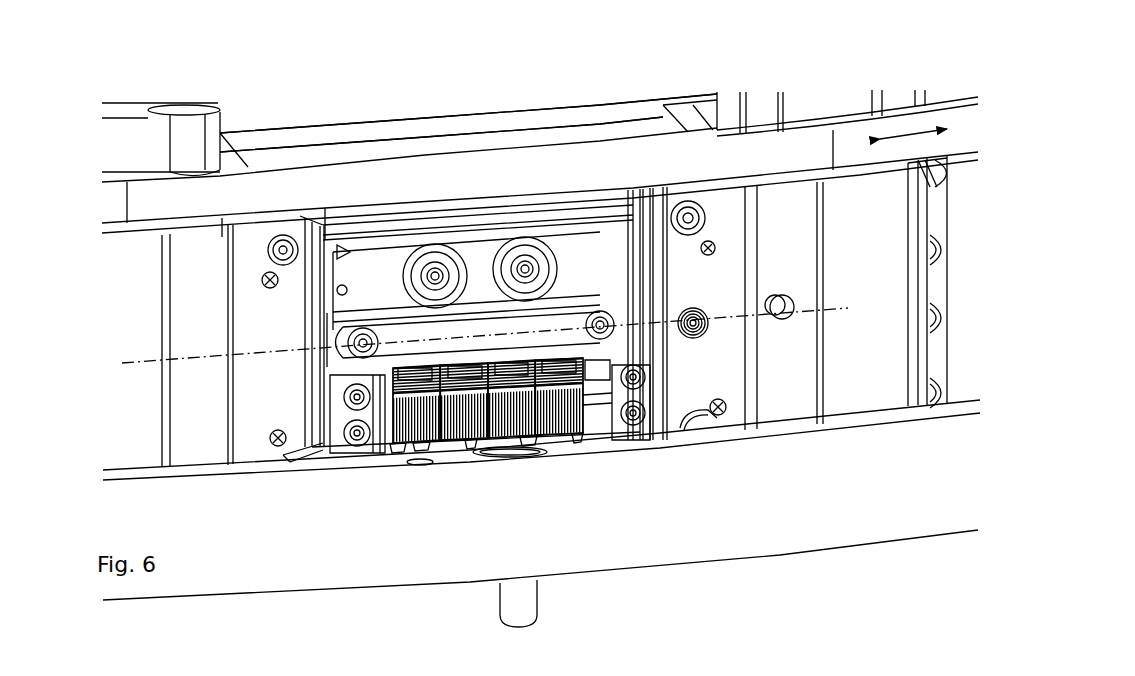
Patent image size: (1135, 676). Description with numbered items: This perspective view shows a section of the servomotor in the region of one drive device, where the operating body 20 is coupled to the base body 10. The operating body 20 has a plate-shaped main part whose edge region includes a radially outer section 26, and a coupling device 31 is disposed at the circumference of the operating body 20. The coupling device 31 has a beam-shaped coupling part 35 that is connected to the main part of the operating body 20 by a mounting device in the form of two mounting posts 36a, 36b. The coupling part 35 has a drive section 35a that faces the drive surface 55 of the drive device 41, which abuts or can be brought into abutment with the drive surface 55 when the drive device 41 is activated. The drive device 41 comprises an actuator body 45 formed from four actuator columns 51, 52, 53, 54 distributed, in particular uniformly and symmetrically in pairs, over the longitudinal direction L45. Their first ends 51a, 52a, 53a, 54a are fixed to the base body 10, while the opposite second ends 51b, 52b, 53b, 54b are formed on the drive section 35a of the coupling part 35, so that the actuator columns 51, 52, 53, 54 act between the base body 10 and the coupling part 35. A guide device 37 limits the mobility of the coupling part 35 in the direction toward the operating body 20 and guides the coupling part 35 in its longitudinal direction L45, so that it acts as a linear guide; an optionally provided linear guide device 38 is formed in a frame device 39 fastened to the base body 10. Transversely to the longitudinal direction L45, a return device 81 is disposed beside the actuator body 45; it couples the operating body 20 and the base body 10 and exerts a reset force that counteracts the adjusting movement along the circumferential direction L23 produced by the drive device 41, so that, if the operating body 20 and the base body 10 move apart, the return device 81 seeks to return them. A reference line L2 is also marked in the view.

The base body 10 is at (873, 523).
The operating body 20 is at (914, 62).
The radially outer section 26 is at (520, 160).
The coupling device 31 is at (617, 150).
The coupling part 35 is at (577, 307).
The drive section 35a is at (397, 443).
The mounting post 36a is at (665, 303).
The mounting post 36b is at (327, 337).
The guide device 37 is at (424, 215).
The linear guide device 38 is at (320, 353).
The frame device 39 is at (320, 380).
The first drive device 41 is at (607, 473).
The actuator body 45 is at (592, 387).
The actuator column 51 is at (570, 438).
The first end of actuator column 51a is at (580, 445).
The second end of actuator column 51b is at (528, 350).
The actuator column 52 is at (510, 438).
The first end of actuator column 52a is at (554, 440).
The second end of actuator column 52b is at (522, 360).
The actuator column 53 is at (453, 443).
The first end of actuator column 53a is at (475, 442).
The second end of actuator column 53b is at (468, 362).
The actuator column 54 is at (402, 450).
The first end of actuator column 54a is at (427, 445).
The second end of actuator column 54b is at (405, 366).
The drive surface 55 is at (582, 403).
The return device 81 is at (948, 285).
The axis line L2 is at (140, 358).
The circumferential direction L23 is at (915, 133).
The longitudinal direction L45 is at (500, 357).